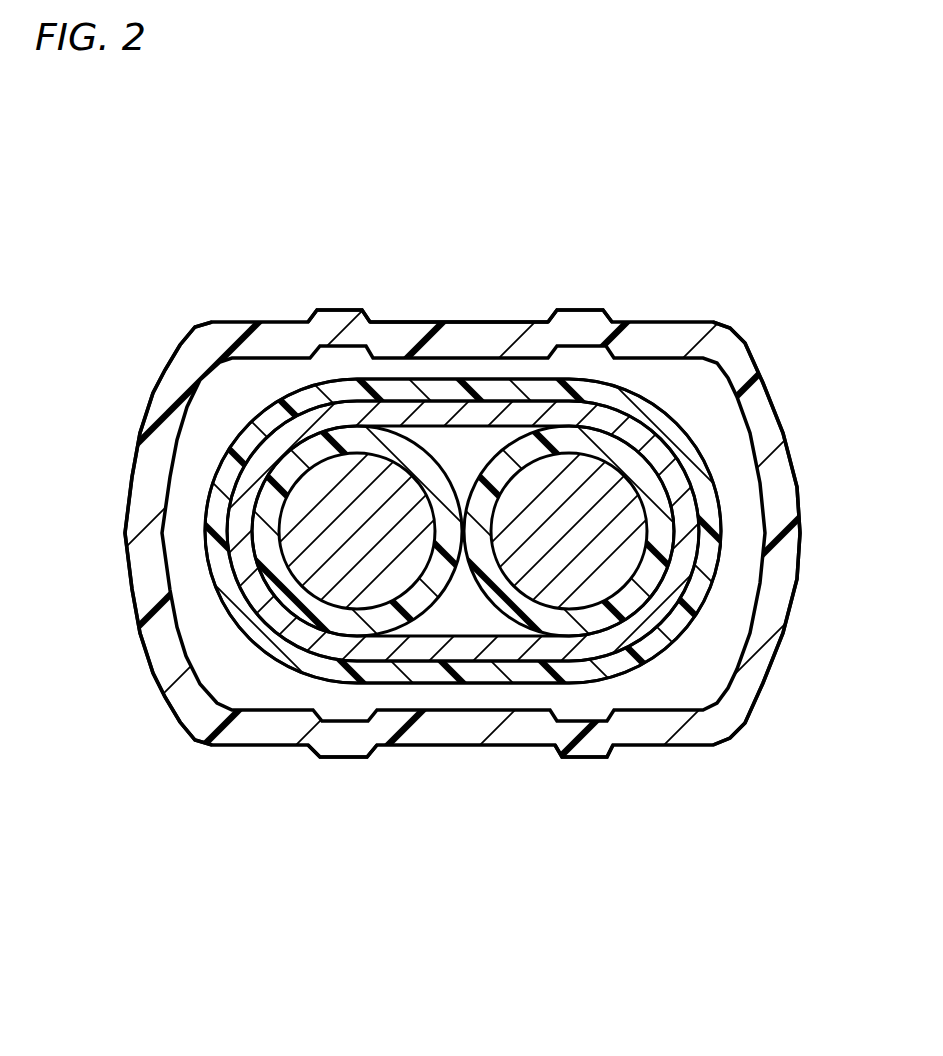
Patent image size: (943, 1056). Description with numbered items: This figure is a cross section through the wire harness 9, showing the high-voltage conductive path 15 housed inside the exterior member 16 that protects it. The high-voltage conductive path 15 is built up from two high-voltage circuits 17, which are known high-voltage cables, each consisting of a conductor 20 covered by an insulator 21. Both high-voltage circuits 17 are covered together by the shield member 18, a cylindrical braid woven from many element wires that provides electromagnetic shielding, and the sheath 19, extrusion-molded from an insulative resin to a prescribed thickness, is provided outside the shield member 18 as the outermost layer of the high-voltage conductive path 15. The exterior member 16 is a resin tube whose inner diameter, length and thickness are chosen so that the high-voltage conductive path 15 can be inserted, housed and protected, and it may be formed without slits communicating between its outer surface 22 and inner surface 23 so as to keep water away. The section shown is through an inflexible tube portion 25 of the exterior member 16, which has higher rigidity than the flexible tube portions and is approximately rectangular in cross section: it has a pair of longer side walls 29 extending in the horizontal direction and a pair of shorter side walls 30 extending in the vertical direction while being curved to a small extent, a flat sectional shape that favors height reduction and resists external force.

The wire harness 9 is at (522, 266).
The high-voltage conductive path 15 is at (267, 668).
The exterior member 16 is at (684, 752).
The high-voltage circuit 17 is at (175, 213).
The shield member 18 is at (492, 648).
The sheath 19 is at (448, 670).
The conductor 20 is at (318, 490).
The insulator 21 is at (350, 440).
The outer surface 22 is at (471, 533).
The inner surface 23 is at (198, 671).
The inflexible tube portion 25 is at (412, 321).
The longer side wall 29 is at (482, 332).
The shorter side wall 30 is at (167, 413).